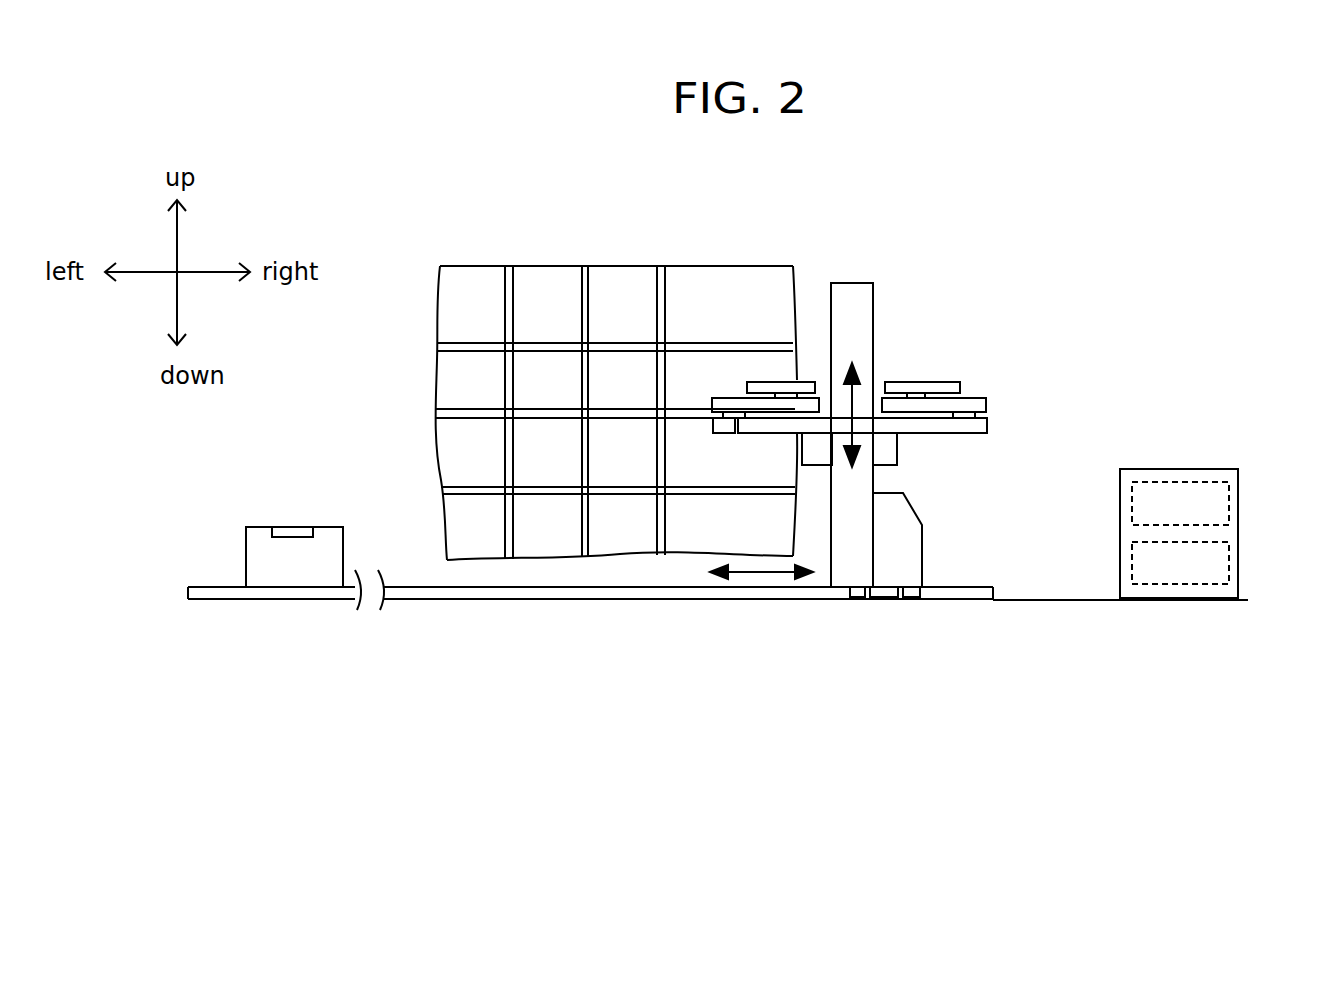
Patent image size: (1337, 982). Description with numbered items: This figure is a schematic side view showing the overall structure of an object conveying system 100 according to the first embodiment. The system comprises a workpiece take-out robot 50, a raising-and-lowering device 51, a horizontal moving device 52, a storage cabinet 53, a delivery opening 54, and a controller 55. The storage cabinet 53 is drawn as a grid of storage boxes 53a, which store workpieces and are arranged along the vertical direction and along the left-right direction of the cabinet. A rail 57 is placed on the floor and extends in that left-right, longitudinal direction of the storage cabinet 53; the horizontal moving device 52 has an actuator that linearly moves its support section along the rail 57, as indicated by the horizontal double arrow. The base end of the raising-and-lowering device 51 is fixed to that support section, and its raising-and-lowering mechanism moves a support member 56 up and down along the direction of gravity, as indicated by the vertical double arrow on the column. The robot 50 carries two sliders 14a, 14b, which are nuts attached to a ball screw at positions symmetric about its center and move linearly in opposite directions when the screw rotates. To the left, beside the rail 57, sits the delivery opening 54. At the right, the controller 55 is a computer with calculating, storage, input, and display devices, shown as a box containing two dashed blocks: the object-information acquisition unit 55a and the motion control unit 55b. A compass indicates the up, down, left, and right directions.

The object conveying system 100 is at (918, 634).
The storage cabinet 53 is at (557, 340).
The storage boxes 53a is at (473, 292).
The workpiece take-out robot 50 is at (998, 382).
The raising-and-lowering device 51 is at (880, 302).
The horizontal moving device 52 is at (905, 563).
The support member 56 is at (883, 457).
The slider (nut) 14a is at (738, 435).
The slider (nut) 14b is at (975, 417).
The rail 57 is at (470, 594).
The delivery opening 54 is at (260, 527).
The controller 55 is at (1226, 492).
The object-information acquisition unit 55a is at (1229, 505).
The motion control unit 55b is at (1229, 561).